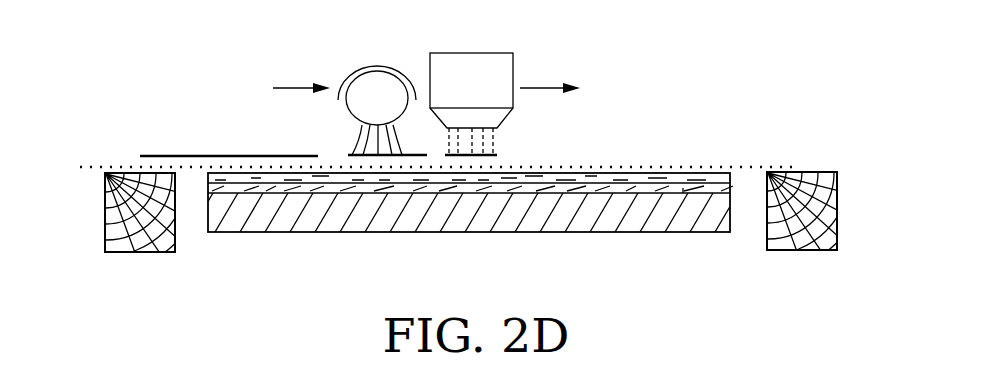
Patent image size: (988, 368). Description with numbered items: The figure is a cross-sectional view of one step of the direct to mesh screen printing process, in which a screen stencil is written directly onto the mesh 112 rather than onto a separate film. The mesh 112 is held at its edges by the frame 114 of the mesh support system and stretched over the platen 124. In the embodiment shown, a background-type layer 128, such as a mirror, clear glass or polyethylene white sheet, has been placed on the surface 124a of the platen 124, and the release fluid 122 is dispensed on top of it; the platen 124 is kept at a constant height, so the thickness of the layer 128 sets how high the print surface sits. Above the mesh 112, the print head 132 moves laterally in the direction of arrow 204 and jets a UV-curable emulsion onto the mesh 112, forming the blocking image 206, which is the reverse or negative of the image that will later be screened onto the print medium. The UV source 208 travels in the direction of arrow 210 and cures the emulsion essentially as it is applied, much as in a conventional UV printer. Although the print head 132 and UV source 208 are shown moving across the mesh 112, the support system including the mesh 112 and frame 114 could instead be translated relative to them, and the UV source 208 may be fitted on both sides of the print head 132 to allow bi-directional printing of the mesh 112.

The mesh 112 is at (641, 160).
The frame 114 is at (125, 222).
The release fluid 122 is at (527, 169).
The platen 124 is at (220, 233).
The surface of the platen 124a is at (683, 190).
The layer 128 is at (590, 169).
The print head 132 is at (442, 65).
The arrow 204 is at (543, 88).
The blocking image 206 is at (223, 156).
The UV source 208 is at (357, 83).
The arrow 210 is at (287, 88).